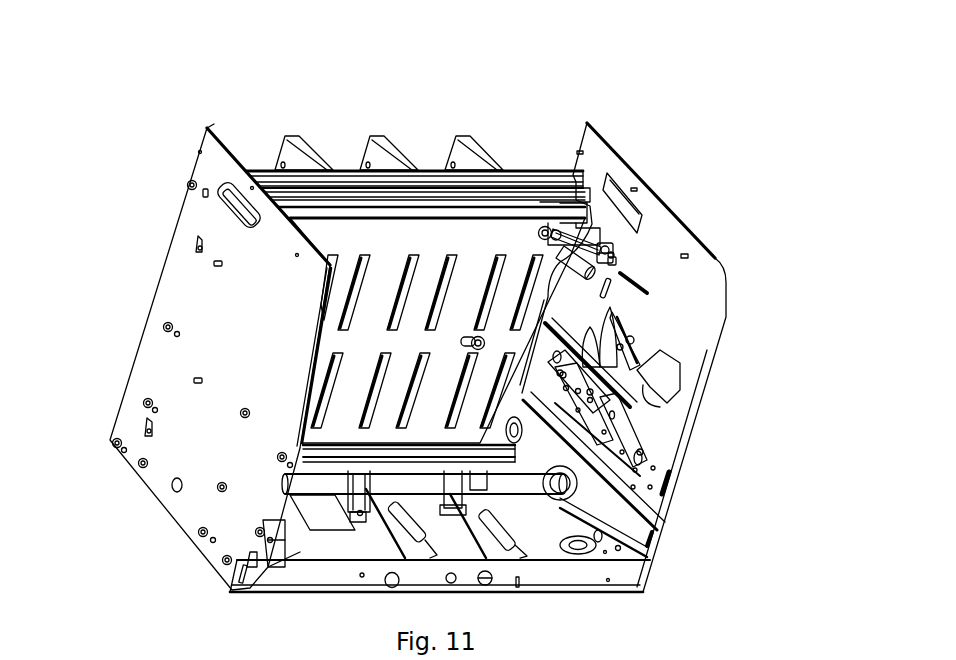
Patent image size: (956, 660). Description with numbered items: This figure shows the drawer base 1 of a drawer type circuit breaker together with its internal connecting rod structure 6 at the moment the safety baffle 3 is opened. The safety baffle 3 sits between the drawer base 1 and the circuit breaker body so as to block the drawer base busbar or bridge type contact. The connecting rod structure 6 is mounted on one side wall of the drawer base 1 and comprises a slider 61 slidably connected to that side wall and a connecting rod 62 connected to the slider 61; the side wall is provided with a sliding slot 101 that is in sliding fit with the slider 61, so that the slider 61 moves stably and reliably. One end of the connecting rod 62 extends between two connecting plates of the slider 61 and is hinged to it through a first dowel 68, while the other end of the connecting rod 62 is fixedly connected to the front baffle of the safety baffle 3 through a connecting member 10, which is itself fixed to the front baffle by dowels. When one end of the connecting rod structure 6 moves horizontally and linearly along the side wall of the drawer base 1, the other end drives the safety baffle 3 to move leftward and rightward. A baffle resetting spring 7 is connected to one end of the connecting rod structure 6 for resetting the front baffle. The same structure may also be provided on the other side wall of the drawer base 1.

The drawer base 1 is at (185, 357).
The safety baffle 3 is at (416, 252).
The connecting member 10 is at (423, 141).
The connecting rod 62 is at (509, 159).
The sliding slot 101 is at (713, 201).
The connecting rod structure 6 is at (714, 218).
The first dowel 68 is at (719, 245).
The slider 61 is at (718, 283).
The baffle resetting spring 7 is at (674, 357).